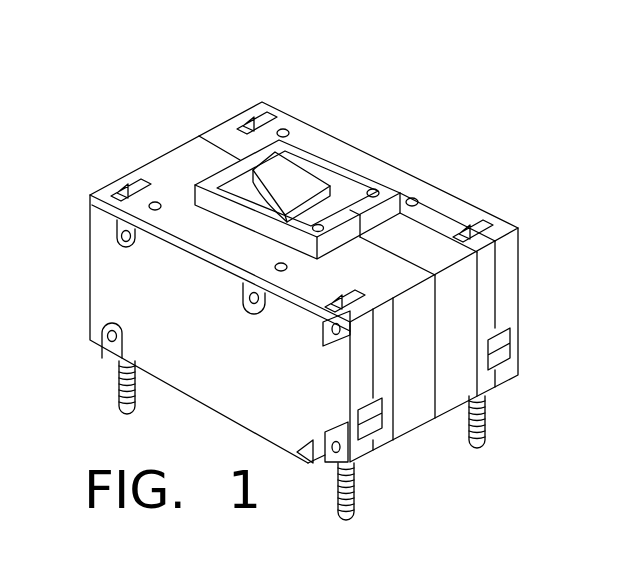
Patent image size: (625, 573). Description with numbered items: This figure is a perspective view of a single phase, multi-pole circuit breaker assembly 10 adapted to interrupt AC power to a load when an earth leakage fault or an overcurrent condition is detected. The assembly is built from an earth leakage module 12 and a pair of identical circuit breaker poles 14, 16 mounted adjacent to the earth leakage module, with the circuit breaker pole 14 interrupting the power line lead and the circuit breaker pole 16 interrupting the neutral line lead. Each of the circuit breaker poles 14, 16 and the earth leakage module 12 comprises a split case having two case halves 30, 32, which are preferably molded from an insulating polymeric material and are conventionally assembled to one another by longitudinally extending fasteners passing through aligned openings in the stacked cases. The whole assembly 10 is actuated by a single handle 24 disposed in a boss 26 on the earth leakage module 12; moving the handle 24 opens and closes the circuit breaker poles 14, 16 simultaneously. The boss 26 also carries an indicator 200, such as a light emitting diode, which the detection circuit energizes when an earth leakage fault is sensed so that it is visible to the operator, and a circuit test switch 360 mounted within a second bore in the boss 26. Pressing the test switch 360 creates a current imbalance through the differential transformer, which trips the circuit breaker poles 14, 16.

The circuit breaker assembly 10 is at (320, 92).
The earth leakage module 12 is at (176, 125).
The circuit breaker pole 14 is at (223, 87).
The circuit breaker pole 16 is at (96, 158).
The handle 24 is at (283, 178).
The boss 26 is at (222, 207).
The case half 30 is at (358, 450).
The case half 32 is at (380, 438).
The indicator 200 is at (385, 186).
The circuit test switch 360 is at (305, 230).